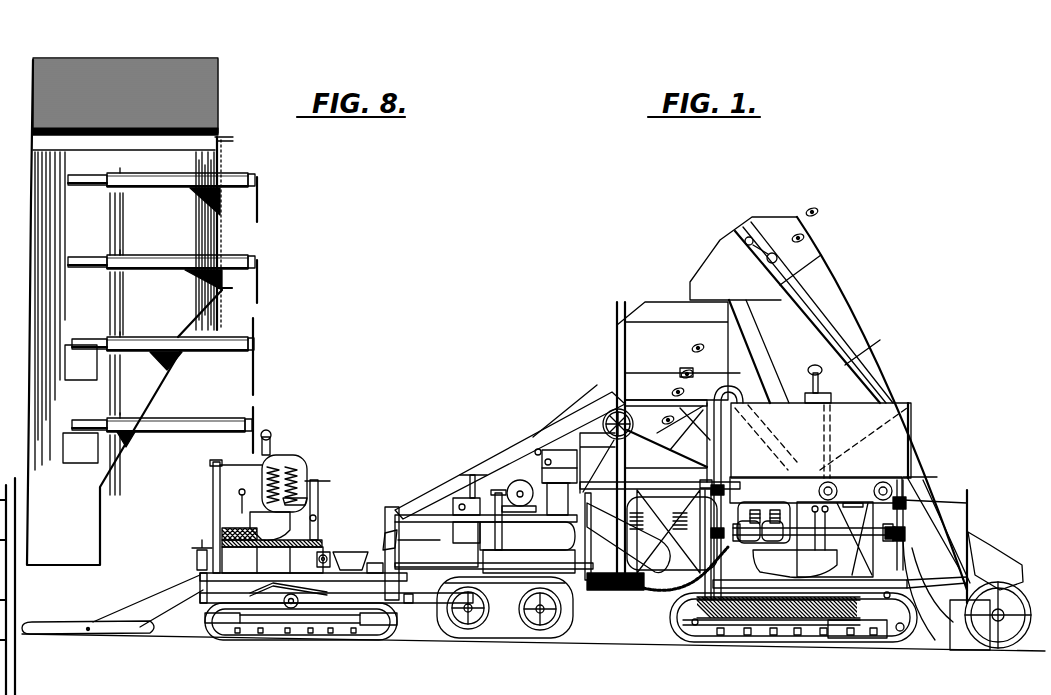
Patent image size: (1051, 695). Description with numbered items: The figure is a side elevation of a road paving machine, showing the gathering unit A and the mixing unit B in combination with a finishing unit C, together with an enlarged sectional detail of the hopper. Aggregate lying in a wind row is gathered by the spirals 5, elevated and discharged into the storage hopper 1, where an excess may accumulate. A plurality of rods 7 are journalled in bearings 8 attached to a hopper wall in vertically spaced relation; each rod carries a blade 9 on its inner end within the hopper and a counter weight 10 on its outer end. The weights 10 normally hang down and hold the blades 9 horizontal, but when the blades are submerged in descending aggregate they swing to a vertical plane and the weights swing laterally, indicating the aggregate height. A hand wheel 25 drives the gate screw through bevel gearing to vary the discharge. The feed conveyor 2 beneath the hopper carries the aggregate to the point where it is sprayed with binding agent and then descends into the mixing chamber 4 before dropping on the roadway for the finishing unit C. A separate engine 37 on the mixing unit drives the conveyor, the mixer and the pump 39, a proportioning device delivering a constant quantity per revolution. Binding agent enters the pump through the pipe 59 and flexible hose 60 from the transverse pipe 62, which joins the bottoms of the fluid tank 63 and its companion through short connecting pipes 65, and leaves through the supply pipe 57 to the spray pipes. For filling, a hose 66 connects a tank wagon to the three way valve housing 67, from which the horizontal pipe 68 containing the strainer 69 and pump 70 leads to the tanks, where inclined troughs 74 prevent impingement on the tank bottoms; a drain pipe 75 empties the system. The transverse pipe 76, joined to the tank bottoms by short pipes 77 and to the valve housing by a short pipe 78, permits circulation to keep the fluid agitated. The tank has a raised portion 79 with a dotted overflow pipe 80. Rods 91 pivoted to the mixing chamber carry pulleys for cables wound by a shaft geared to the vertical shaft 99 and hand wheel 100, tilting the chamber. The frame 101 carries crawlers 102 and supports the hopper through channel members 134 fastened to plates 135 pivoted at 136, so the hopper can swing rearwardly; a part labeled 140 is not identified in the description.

In FIG. 1, the storage hopper 1 is at (650, 347).
In FIG. 1, the feed conveyor 2 is at (587, 410).
In FIG. 1, the mixing chamber 4 is at (410, 527).
In FIG. 1, the spirals 5 is at (1000, 577).
In FIG. 8, the rods 7 is at (247, 260).
In FIG. 1, the rods 7 is at (687, 368).
In FIG. 8, the bearings 8 is at (217, 263).
In FIG. 8, the blades 9 is at (73, 355).
In FIG. 8, the counter weights 10 is at (258, 204).
In FIG. 1, the hand wheel 25 is at (608, 420).
In FIG. 1, the engine 37 is at (640, 590).
In FIG. 1, the pump 39 is at (518, 490).
In FIG. 1, the supply pipe 57 is at (547, 490).
In FIG. 1, the pipe 59 is at (507, 530).
In FIG. 1, the flexible hose 60 is at (673, 593).
In FIG. 1, the transverse pipe 62 is at (737, 490).
In FIG. 1, the fluid tank 63 is at (883, 438).
In FIG. 1, the short connecting pipes 65 is at (740, 485).
In FIG. 1, the hose 66 is at (933, 633).
In FIG. 1, the three way valve housing 67 is at (887, 533).
In FIG. 1, the horizontal pipe 68 is at (855, 537).
In FIG. 1, the strainer 69 is at (772, 540).
In FIG. 1, the pump 70 is at (750, 540).
In FIG. 1, the inclined troughs 74 is at (834, 421).
In FIG. 1, the drain pipe 75 is at (700, 640).
In FIG. 1, the transverse pipe 76 is at (897, 515).
In FIG. 1, the short pipes 77 is at (893, 490).
In FIG. 1, the short pipe 78 is at (900, 517).
In FIG. 1, the raised portion 79 is at (790, 355).
In FIG. 1, the overflow pipe 80 is at (917, 400).
In FIG. 1, the rods 91 is at (427, 527).
In FIG. 1, the vertical shaft 99 is at (436, 544).
In FIG. 1, the hand wheel 100 is at (473, 477).
In FIG. 1, the frame 101 is at (573, 640).
In FIG. 1, the crawlers 102 is at (502, 580).
In FIG. 1, the channel members 134 is at (618, 328).
In FIG. 1, the plates 135 is at (610, 485).
In FIG. 1, the pivots 136 is at (600, 487).
In FIG. 1, the valve box 140 is at (693, 374).
In FIG. 1, the gathering unit A is at (792, 345).
In FIG. 1, the mixing unit B is at (410, 510).
In FIG. 1, the finishing unit C is at (300, 573).